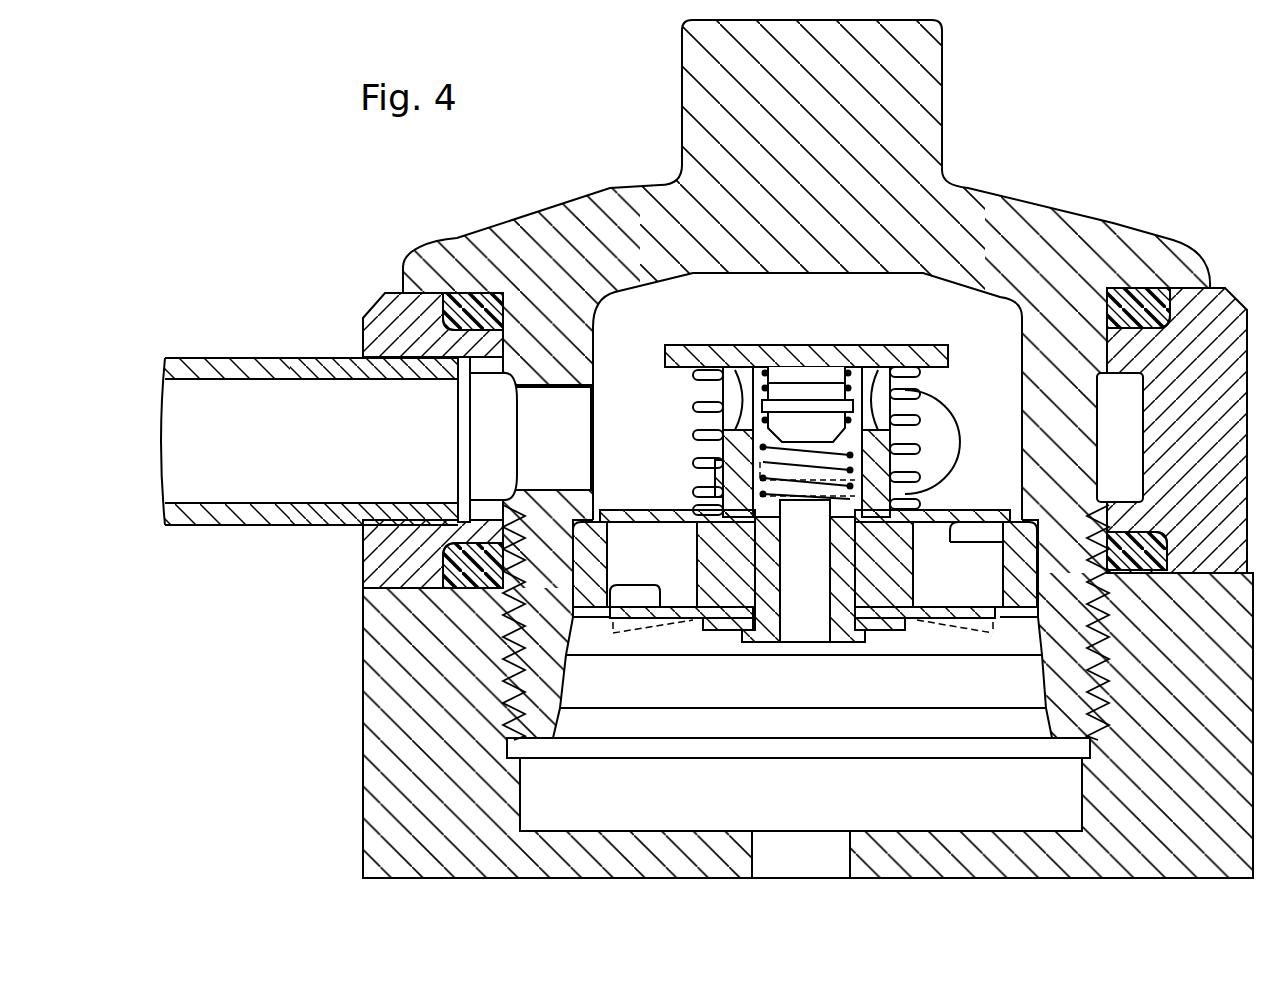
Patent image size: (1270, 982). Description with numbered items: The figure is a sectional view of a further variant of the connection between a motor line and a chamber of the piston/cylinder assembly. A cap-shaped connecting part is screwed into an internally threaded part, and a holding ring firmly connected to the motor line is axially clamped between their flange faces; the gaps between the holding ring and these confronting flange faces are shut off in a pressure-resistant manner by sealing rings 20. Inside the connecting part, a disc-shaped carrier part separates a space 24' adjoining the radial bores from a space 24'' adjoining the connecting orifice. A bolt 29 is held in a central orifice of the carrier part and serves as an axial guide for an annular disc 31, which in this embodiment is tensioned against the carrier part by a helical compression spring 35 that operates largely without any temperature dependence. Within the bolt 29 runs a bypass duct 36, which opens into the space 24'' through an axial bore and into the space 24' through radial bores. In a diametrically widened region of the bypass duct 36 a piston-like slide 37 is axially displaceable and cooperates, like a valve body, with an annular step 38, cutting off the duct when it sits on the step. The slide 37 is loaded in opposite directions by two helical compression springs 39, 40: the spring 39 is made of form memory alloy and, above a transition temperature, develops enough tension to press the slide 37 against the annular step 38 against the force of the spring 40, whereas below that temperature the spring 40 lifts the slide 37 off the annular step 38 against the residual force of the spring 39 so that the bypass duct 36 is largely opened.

The sealing rings 20 is at (598, 563).
The space 24' is at (807, 396).
The space 24'' is at (798, 724).
The bolt 29 is at (877, 460).
The annular disc 31 is at (612, 510).
The helical compression spring 35 is at (690, 463).
The bypass duct 36 is at (803, 571).
The piston-like slide 37 is at (800, 388).
The annular step 38 is at (863, 533).
The helical compression spring 39 is at (755, 345).
The helical compression spring 40 is at (723, 417).